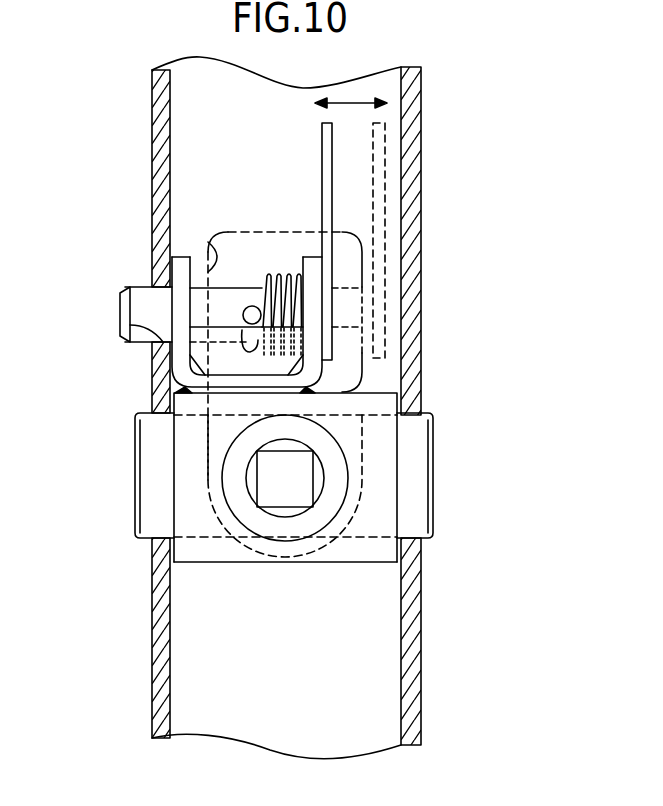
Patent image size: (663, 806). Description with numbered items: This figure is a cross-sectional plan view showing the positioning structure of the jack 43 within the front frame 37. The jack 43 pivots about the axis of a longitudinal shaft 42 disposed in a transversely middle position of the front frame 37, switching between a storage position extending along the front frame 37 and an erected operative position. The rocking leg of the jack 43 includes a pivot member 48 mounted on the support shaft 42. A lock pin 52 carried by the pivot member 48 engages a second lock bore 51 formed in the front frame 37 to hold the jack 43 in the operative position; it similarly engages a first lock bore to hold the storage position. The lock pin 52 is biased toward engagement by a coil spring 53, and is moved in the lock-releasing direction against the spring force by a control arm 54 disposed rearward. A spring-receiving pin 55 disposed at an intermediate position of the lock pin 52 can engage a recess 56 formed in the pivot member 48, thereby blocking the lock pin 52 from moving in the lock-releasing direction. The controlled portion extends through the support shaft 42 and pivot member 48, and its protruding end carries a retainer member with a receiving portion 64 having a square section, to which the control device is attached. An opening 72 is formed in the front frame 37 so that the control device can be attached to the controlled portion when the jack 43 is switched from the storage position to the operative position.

The front frame 37 is at (421, 236).
The longitudinal shaft 42 is at (420, 472).
The jack 43 is at (213, 566).
The pivot member 48 is at (375, 555).
The second lock bore 51 is at (143, 329).
The lock pin 52 is at (120, 305).
The coil spring 53 is at (277, 272).
The control arm 54 is at (372, 147).
The spring-receiving pin 55 is at (250, 306).
The recess 56 is at (257, 345).
The receiving portion 64 is at (283, 497).
The opening 72 is at (205, 243).